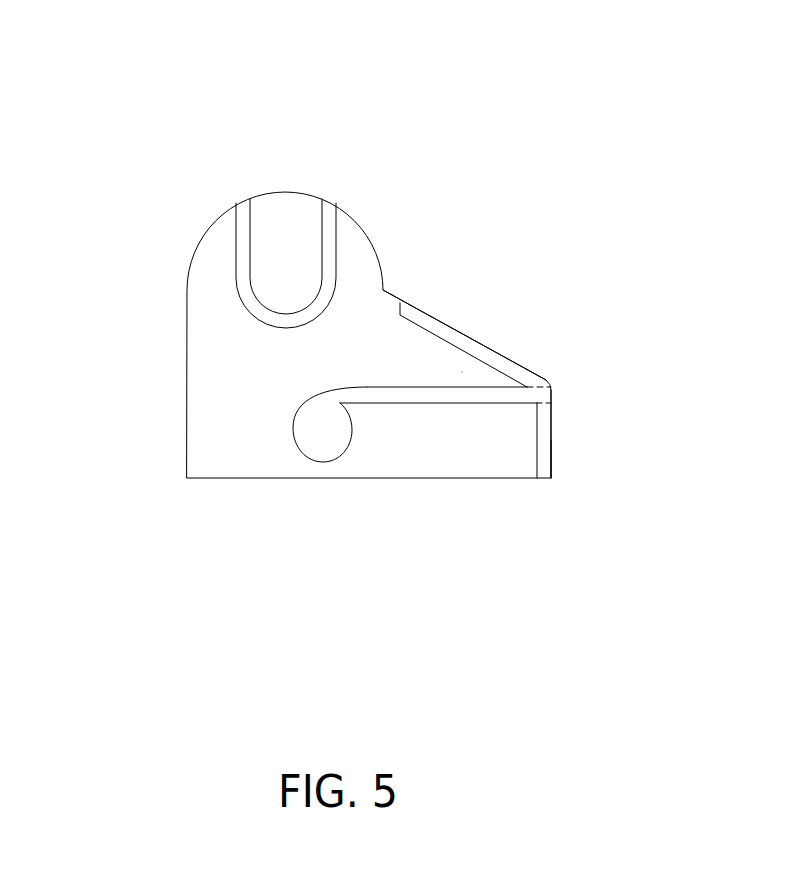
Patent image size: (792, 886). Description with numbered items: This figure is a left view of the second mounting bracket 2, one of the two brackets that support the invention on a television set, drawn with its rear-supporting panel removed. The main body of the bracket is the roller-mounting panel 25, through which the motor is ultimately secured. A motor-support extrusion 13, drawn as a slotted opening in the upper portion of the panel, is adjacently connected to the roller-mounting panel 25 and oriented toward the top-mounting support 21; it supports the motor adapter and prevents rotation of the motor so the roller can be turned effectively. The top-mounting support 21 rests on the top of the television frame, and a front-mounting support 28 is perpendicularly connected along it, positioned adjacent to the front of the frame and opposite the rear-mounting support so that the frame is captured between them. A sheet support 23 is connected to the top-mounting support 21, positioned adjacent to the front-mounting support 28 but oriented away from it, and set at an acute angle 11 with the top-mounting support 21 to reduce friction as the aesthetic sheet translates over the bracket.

The second mounting bracket 2 is at (628, 48).
The acute angle 11 is at (466, 386).
The motor-support extrusion 13 is at (241, 228).
The top-mounting support 21 is at (413, 393).
The sheet support 23 is at (512, 375).
The roller-mounting panel 25 is at (205, 429).
The front-mounting support 28 is at (542, 463).